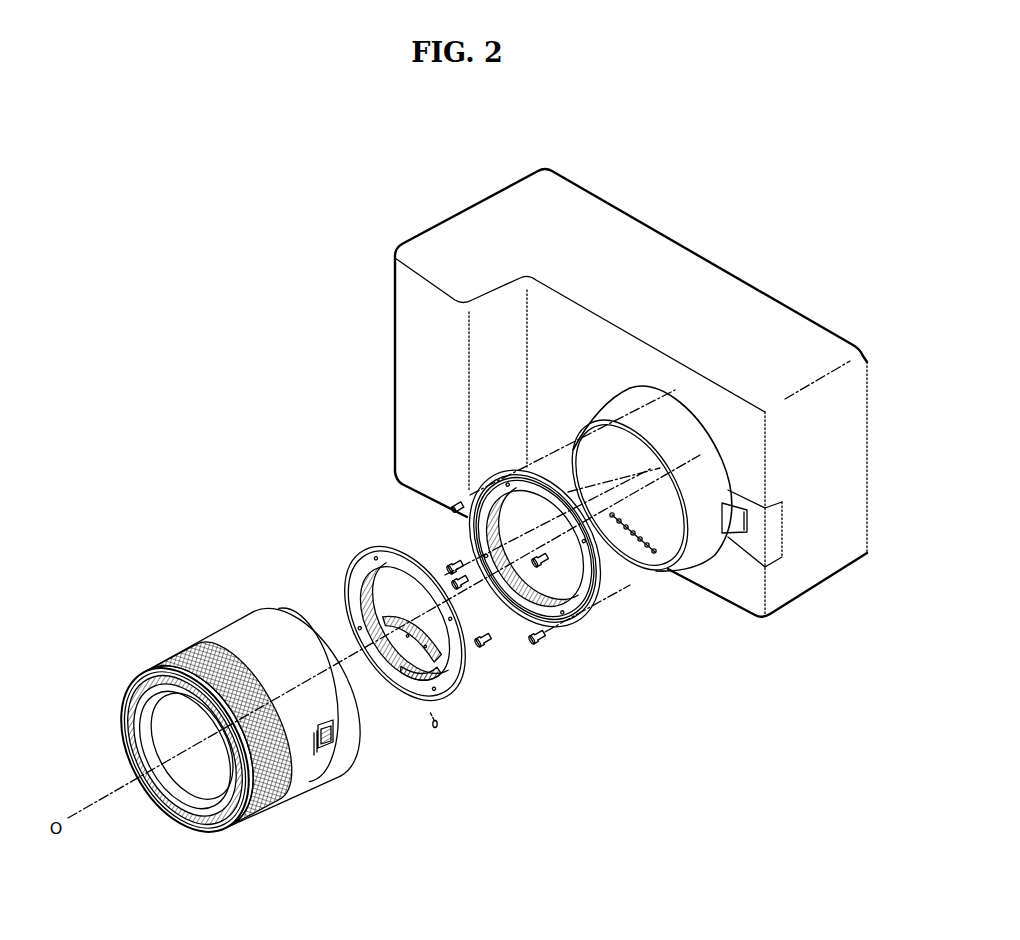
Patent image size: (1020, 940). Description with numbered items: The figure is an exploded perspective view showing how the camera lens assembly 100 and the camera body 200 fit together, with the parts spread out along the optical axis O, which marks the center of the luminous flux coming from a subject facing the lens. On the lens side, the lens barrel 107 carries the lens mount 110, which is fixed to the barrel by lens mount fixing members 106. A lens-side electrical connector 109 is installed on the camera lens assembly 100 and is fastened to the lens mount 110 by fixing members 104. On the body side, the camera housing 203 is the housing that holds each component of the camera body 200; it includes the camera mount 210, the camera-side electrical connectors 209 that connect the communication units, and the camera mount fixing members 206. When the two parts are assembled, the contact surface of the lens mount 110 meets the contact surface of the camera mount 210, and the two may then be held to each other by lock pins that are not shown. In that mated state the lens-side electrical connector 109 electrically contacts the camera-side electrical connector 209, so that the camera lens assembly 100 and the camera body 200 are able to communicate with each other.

The camera lens assembly 100 is at (373, 661).
The fixing members 104 is at (436, 729).
The lens mount fixing members 106 is at (491, 649).
The lens barrel 107 is at (262, 614).
The lens-side electrical connector 109 is at (461, 686).
The lens mount 110 is at (355, 575).
The camera body 200 is at (631, 421).
The camera housing 203 is at (783, 343).
The camera mount fixing members 206 is at (544, 645).
The camera-side electrical connectors 209 is at (638, 550).
The camera mount 210 is at (575, 621).